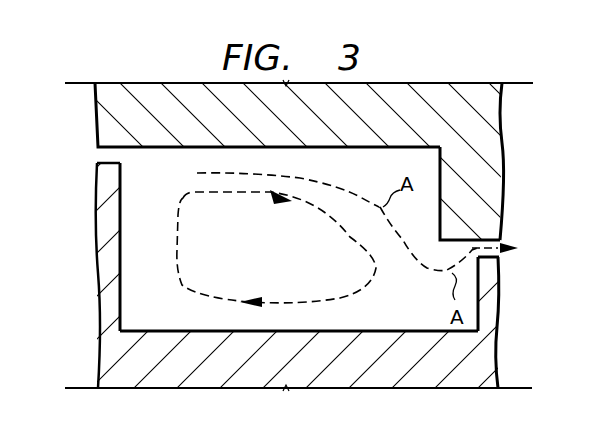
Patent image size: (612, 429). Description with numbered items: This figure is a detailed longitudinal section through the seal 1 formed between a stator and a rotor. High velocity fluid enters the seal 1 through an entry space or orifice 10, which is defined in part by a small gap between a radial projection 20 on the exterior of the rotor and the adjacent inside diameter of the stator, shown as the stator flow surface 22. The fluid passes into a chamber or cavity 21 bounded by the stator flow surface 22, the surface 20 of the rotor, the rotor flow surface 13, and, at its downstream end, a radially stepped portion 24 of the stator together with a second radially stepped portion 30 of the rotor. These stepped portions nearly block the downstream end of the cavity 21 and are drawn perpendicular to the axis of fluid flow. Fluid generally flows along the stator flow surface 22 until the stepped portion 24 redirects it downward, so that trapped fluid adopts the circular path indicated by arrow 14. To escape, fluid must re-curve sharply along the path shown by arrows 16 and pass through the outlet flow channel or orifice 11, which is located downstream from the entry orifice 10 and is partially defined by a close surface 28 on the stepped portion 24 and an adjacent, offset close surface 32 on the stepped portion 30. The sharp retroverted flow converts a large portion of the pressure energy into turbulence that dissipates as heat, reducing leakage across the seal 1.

The seal 1 is at (78, 165).
The entry space or orifice 10 is at (118, 158).
The flow channel or orifice 11 is at (500, 241).
The rotor flow surface 13 is at (161, 331).
The arrow 14 is at (303, 303).
The arrows 16 is at (422, 270).
The radial projection 20 is at (122, 216).
The cavity 21 is at (251, 248).
The stator flow surface 22 is at (325, 148).
The radially stepped portion 24 is at (497, 116).
The surface 28 is at (435, 250).
The second radially stepped portion 30 is at (495, 300).
The surface 32 is at (505, 258).